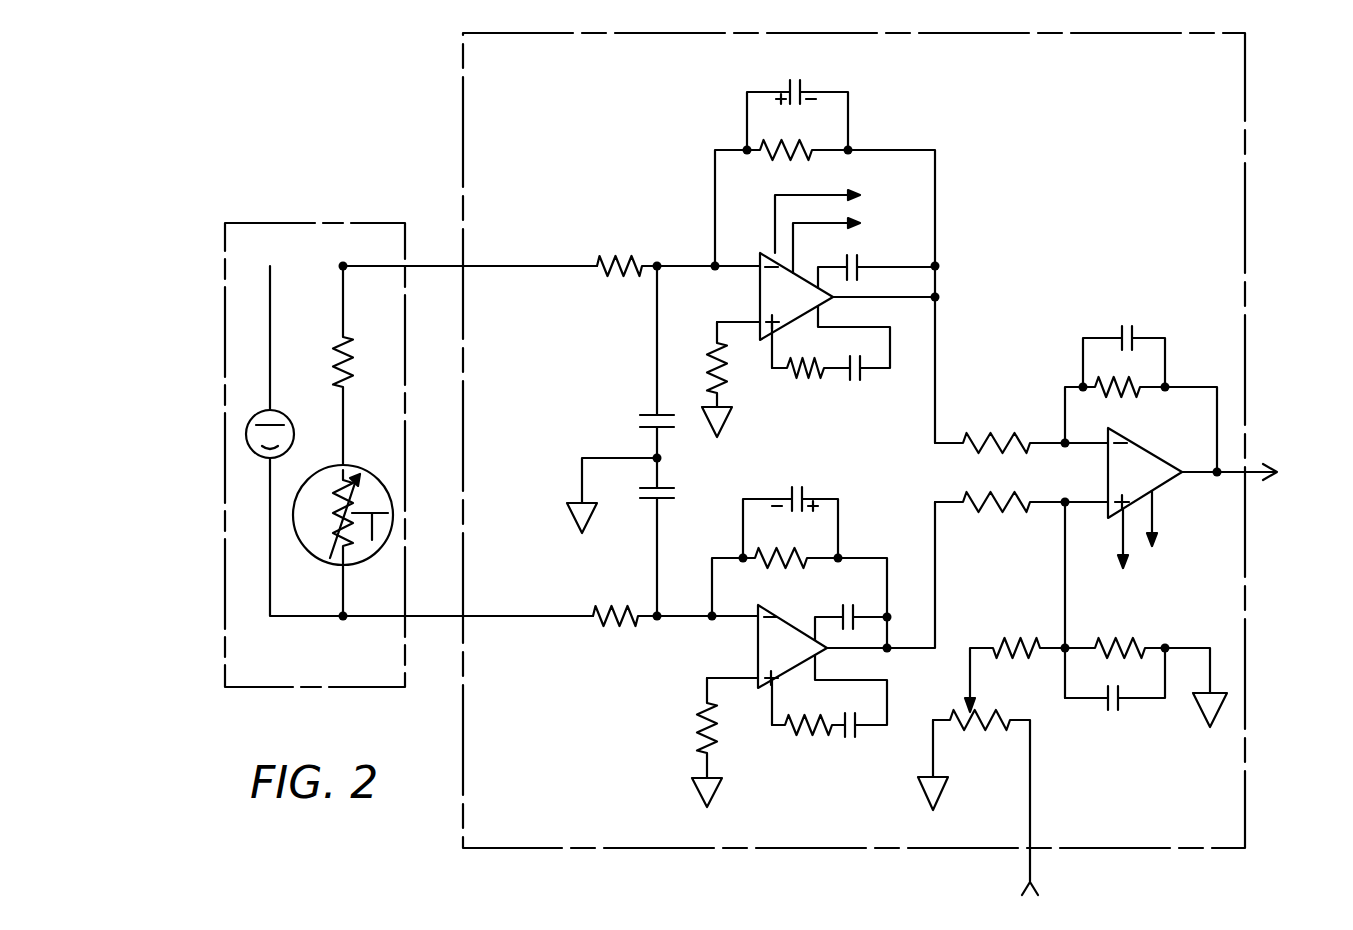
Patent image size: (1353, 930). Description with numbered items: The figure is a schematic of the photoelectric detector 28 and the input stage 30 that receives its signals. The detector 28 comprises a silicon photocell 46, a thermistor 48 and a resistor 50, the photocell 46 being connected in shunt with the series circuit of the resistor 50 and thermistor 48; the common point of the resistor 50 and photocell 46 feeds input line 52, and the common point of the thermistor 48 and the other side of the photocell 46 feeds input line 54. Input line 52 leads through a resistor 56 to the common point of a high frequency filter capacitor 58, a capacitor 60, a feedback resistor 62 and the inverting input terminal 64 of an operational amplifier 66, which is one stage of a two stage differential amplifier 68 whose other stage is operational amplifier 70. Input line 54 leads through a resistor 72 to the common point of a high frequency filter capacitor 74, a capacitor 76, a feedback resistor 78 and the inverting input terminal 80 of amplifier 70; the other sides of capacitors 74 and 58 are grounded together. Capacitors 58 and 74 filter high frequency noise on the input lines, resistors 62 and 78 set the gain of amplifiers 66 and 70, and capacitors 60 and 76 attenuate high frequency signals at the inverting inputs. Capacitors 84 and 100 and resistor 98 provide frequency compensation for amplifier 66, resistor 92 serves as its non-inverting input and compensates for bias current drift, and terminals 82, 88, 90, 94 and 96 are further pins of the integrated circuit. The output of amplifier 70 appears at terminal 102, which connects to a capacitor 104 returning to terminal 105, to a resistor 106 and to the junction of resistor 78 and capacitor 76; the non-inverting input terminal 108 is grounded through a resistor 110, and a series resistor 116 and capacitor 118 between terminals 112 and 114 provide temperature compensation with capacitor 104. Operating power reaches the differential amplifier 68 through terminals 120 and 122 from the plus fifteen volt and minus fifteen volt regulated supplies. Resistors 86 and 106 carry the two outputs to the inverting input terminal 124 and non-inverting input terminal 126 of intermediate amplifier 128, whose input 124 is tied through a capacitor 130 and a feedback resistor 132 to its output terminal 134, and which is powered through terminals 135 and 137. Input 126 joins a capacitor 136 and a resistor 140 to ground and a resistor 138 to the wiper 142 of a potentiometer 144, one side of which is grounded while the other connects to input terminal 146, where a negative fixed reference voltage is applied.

The photoelectric detector 28 is at (318, 223).
The input stage 30 is at (870, 33).
The silicon photocell 46 is at (253, 420).
The thermistor 48 is at (312, 556).
The resistor 50 is at (341, 337).
The input line 52 is at (422, 263).
The input line 54 is at (418, 615).
The resistor 56 is at (604, 254).
The high frequency filter capacitor 58 is at (646, 414).
The capacitor 60 is at (805, 89).
The feedback resistor 62 is at (785, 150).
The inverting input terminal 64 is at (760, 263).
The operational amplifier 66 is at (796, 296).
The two stage differential amplifier 68 is at (835, 425).
The operational amplifier 70 is at (792, 646).
The resistor 72 is at (608, 612).
The high frequency filter capacitor 74 is at (648, 499).
The capacitor 76 is at (805, 494).
The feedback resistor 78 is at (782, 557).
The inverting input terminal 80 is at (758, 614).
The terminal 82 is at (838, 298).
The capacitor 84 is at (858, 272).
The resistor 86 is at (968, 440).
The terminal 88 is at (818, 275).
The terminal 90 is at (760, 320).
The resistor 92 is at (723, 380).
The terminal 94 is at (775, 324).
The terminal 96 is at (820, 310).
The resistor 98 is at (807, 373).
The capacitor 100 is at (866, 373).
The output terminal 102 is at (832, 649).
The capacitor 104 is at (860, 600).
The terminal 105 is at (815, 628).
The resistor 106 is at (969, 505).
The non-inverting input terminal 108 is at (758, 676).
The resistor 110 is at (704, 704).
The terminal 112 is at (768, 690).
The terminal 114 is at (815, 666).
The resistor 116 is at (803, 730).
The capacitor 118 is at (846, 740).
The terminal 120 is at (806, 189).
The terminal 122 is at (793, 223).
The inverting input terminal 124 is at (1078, 440).
The non-inverting input terminal 126 is at (1086, 483).
The intermediate amplifier 128 is at (1145, 473).
The capacitor 130 is at (1136, 336).
The feedback resistor 132 is at (1140, 388).
The output terminal 134 is at (1228, 478).
The terminal 135 is at (1120, 516).
The capacitor 136 is at (1100, 710).
The terminal 137 is at (1160, 508).
The resistor 138 is at (1018, 641).
The resistor 140 is at (1115, 640).
The wiper 142 is at (972, 676).
The potentiometer 144 is at (998, 713).
The input terminal 146 is at (1033, 870).